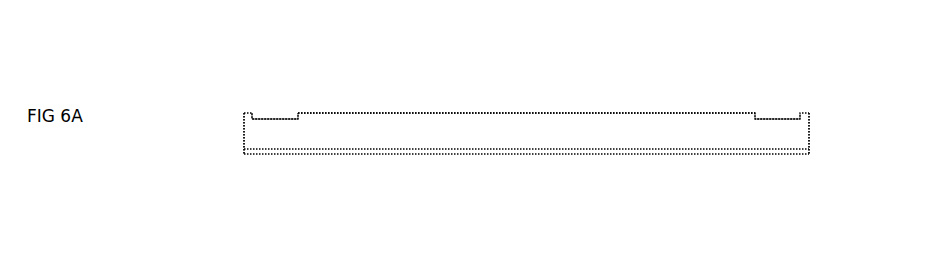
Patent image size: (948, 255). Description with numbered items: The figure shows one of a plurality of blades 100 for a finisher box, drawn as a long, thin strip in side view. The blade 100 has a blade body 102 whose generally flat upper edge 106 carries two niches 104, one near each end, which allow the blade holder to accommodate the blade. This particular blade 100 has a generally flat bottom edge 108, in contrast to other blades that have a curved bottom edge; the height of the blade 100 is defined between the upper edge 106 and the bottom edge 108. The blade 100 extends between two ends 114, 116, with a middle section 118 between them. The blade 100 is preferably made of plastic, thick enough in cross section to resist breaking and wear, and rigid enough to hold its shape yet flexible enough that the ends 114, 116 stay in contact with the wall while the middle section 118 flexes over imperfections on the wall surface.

The blade 100 is at (860, 116).
The blade body 102 is at (521, 118).
The niches 104 is at (270, 114).
The upper edge 106 is at (643, 112).
The bottom edge 108 is at (631, 151).
The end 114 is at (248, 140).
The end 116 is at (803, 140).
The middle section 118 is at (494, 118).